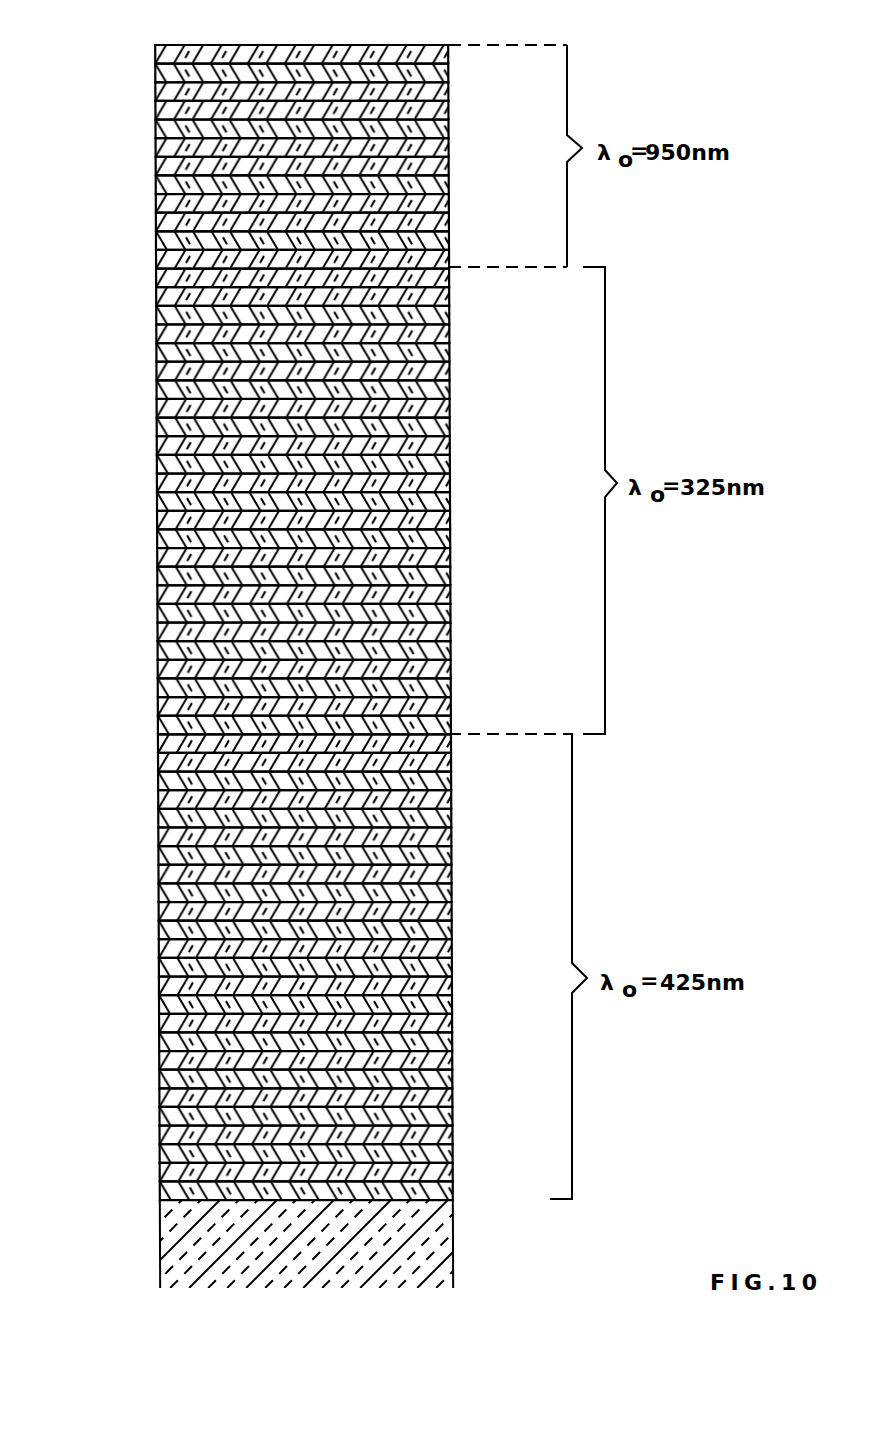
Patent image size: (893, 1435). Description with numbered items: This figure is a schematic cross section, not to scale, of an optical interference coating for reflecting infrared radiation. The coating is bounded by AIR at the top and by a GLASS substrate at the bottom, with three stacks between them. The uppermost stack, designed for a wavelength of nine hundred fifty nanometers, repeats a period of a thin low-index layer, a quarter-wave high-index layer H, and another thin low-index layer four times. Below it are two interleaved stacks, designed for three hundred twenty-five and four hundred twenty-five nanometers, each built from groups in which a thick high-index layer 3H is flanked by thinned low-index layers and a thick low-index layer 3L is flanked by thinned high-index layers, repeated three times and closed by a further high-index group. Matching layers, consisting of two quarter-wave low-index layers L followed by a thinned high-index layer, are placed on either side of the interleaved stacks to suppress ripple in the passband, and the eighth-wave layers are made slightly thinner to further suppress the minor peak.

The high-index layer H is at (449, 73).
The low-index layer L is at (450, 278).
The three-quarter-wave high-index layer 3H is at (450, 464).
The three-quarter-wave low-index layer 3L is at (450, 520).
The glass substrate GLASS is at (447, 1252).
The air AIR is at (311, 20).